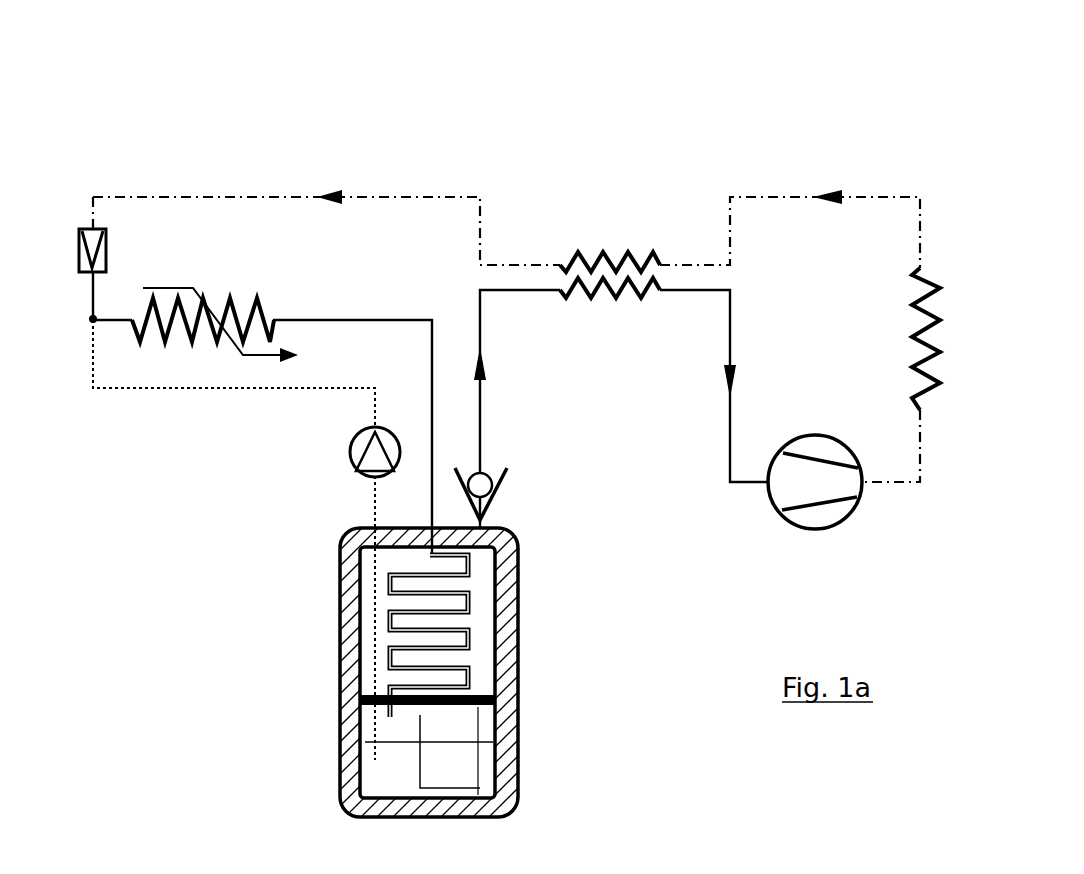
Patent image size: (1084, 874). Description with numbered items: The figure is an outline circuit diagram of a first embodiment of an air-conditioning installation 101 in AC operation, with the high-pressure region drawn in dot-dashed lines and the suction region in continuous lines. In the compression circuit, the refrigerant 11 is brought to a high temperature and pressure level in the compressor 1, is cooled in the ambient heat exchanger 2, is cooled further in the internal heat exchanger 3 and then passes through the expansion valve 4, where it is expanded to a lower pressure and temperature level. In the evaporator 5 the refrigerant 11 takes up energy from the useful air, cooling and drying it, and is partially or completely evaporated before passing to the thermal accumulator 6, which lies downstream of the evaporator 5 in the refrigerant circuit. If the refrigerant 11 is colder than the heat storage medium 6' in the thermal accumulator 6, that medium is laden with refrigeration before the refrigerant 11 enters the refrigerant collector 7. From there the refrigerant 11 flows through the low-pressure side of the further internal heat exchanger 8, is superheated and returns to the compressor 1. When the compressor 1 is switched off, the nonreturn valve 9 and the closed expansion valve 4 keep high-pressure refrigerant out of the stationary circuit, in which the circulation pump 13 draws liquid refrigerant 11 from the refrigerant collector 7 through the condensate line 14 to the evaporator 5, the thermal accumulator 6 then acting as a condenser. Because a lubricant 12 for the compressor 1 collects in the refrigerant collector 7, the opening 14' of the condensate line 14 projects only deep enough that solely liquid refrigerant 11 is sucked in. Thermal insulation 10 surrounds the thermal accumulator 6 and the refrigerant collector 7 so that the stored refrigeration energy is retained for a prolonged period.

The air-conditioning installation 101 is at (852, 132).
The compressor 1 is at (808, 529).
The ambient heat exchanger 2 is at (914, 337).
The internal heat exchanger 3 is at (601, 258).
The expansion valve 4 is at (105, 232).
The evaporator 5 is at (253, 303).
The thermal accumulator 6 is at (338, 636).
The heat storage medium 6' is at (338, 599).
The refrigerant collector 7 is at (515, 727).
The further internal heat exchanger 8 is at (621, 300).
The nonreturn valve 9 is at (505, 487).
The thermal insulation 10 is at (510, 590).
The refrigerant 11 is at (457, 763).
The lubricant 12 is at (395, 787).
The circulation pump 13 is at (345, 447).
The condensate line 14 is at (234, 540).
The opening of the condensate line 14' is at (319, 764).